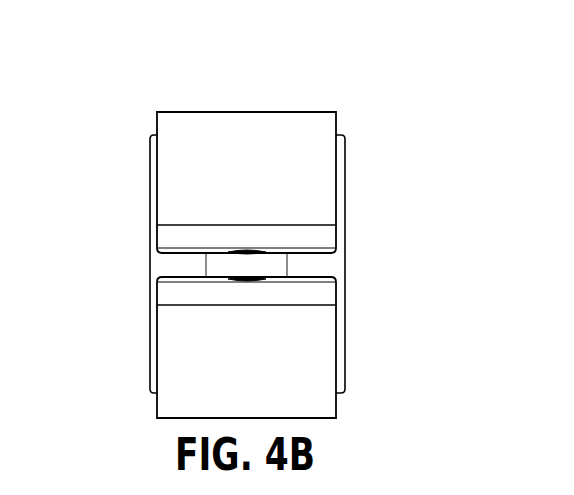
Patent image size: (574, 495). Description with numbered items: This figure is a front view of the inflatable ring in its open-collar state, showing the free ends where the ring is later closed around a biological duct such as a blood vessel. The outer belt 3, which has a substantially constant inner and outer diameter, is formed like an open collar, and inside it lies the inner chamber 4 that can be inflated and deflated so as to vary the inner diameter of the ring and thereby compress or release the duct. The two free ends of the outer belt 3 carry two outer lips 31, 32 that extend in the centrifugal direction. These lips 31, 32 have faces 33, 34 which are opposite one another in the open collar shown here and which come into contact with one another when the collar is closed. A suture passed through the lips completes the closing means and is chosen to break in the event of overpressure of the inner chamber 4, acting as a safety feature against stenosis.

The outer belt 3 is at (193, 112).
The outer lip 31 is at (172, 238).
The outer lip 32 is at (167, 293).
The face 33 is at (320, 257).
The face 34 is at (158, 258).
The inner chamber 4 is at (150, 182).